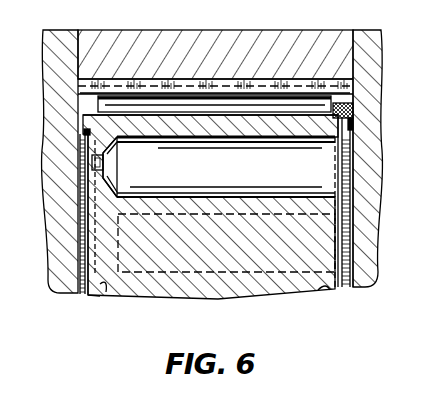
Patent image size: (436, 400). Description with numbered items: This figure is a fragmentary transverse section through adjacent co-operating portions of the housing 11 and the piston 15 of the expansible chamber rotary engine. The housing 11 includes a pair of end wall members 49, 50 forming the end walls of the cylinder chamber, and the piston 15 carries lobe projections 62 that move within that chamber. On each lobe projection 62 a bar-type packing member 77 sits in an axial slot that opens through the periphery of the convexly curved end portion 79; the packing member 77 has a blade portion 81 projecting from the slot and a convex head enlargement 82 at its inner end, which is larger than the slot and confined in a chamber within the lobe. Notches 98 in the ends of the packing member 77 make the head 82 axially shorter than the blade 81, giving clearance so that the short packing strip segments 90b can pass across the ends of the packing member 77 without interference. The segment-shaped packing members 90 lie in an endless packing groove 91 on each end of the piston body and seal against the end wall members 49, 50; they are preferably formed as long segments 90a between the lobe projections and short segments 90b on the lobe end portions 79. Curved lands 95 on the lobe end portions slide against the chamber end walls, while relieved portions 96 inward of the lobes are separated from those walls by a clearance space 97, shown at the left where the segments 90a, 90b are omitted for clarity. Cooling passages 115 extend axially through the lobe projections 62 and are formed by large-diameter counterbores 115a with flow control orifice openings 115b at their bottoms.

The housing 11 is at (216, 148).
The end wall member 49 is at (52, 30).
The end wall member 50 is at (396, 14).
The bar-type packing member 77 is at (116, 78).
The convexly curved end portion 79 is at (149, 78).
The blade portion 81 is at (187, 85).
The notch 98 is at (336, 88).
The head enlargement 82 is at (249, 107).
The short packing strip segment 90b is at (354, 108).
The lobe projection 62 is at (351, 126).
The piston 15 is at (224, 119).
The piston passage 115 is at (326, 166).
The counterbore 115a is at (155, 198).
The flow control orifice opening 115b is at (104, 165).
The curved land 95 is at (83, 132).
The clearance space 97 is at (79, 192).
The relieved portion 96 is at (85, 219).
The segment-shaped packing member 90 is at (354, 213).
The long packing strip segment 90a is at (354, 248).
The packing groove 91 is at (105, 288).